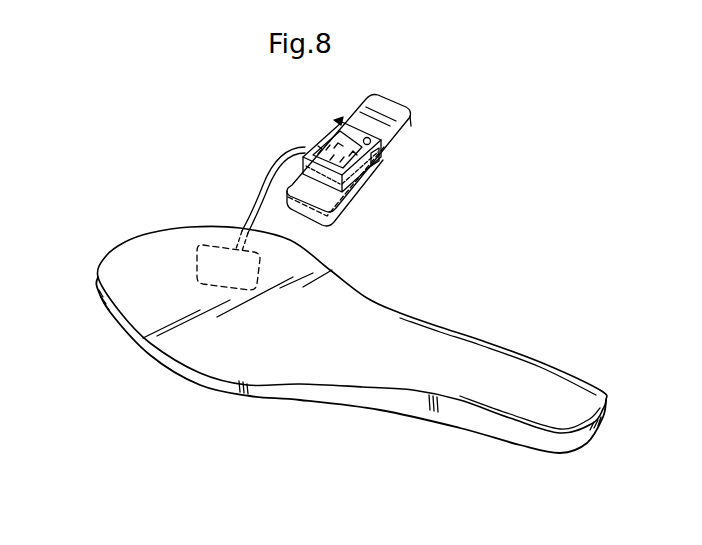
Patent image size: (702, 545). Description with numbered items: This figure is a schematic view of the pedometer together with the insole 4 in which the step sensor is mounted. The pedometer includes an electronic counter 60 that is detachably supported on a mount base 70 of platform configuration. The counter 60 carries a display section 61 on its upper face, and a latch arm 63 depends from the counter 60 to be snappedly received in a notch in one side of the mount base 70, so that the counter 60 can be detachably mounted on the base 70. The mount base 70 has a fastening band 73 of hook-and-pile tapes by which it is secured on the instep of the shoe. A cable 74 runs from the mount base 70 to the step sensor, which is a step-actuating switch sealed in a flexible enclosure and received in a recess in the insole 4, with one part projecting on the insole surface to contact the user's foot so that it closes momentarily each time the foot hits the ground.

The insole 4 is at (440, 348).
The electronic counter 60 is at (338, 118).
The display section 61 is at (325, 142).
The latch arm 63 is at (375, 175).
The mount base 70 is at (358, 187).
The fastening band 73 is at (378, 117).
The cable 74 is at (255, 188).